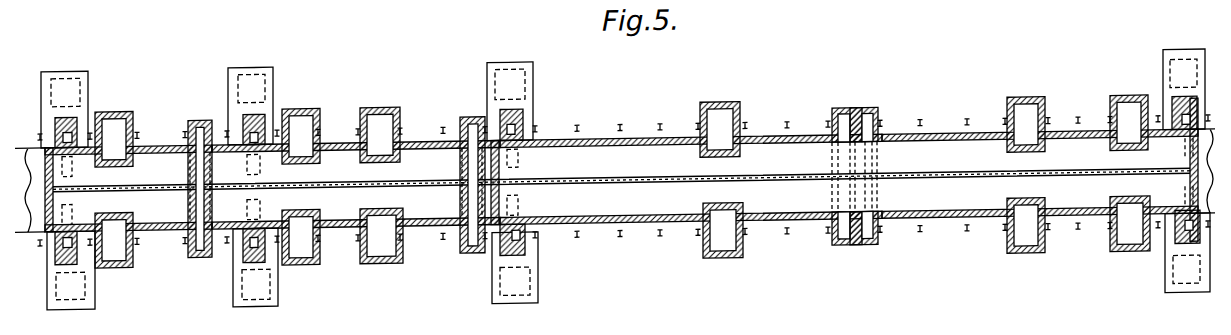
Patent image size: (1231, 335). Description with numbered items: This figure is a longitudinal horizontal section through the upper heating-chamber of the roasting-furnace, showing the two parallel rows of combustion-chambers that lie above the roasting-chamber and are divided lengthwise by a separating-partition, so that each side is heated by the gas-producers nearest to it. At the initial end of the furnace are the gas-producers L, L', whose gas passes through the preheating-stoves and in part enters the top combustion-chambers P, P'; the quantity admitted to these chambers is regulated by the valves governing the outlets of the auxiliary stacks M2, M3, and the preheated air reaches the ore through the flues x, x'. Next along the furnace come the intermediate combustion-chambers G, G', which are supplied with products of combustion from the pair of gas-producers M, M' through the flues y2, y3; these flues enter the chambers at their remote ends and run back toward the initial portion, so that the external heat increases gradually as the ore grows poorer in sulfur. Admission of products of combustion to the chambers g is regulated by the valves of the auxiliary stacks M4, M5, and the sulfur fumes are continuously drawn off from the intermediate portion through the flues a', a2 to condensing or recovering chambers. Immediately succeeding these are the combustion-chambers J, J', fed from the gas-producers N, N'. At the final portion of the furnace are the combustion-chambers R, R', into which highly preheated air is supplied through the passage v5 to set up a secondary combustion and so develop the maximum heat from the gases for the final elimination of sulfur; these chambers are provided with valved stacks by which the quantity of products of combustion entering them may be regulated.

The combustion-chamber R' is at (128, 167).
The combustion-chamber R is at (128, 214).
The combustion-chamber G' is at (691, 156).
The combustion-chamber G is at (691, 204).
The top combustion-chamber P' is at (1040, 150).
The top combustion-chamber P is at (1040, 197).
The chamber g is at (345, 185).
The opening or passage v5 is at (117, 174).
The flue a' is at (511, 116).
The flue a2 is at (302, 268).
The combustion-chamber J' is at (400, 144).
The combustion-chamber J is at (400, 227).
The flue x' is at (1073, 115).
The flue x is at (1078, 231).
The auxiliary stack M4 is at (838, 121).
The auxiliary stack M2 is at (876, 121).
The auxiliary stack M5 is at (845, 258).
The auxiliary stack M3 is at (878, 258).
The gas-producer N' is at (250, 106).
The gas-producer N is at (266, 262).
The gas-producer M' is at (507, 86).
The gas-producer M is at (487, 264).
The flue y2 is at (516, 171).
The flue y3 is at (515, 215).
The gas-producer L' is at (1165, 88).
The gas-producer L is at (1170, 261).